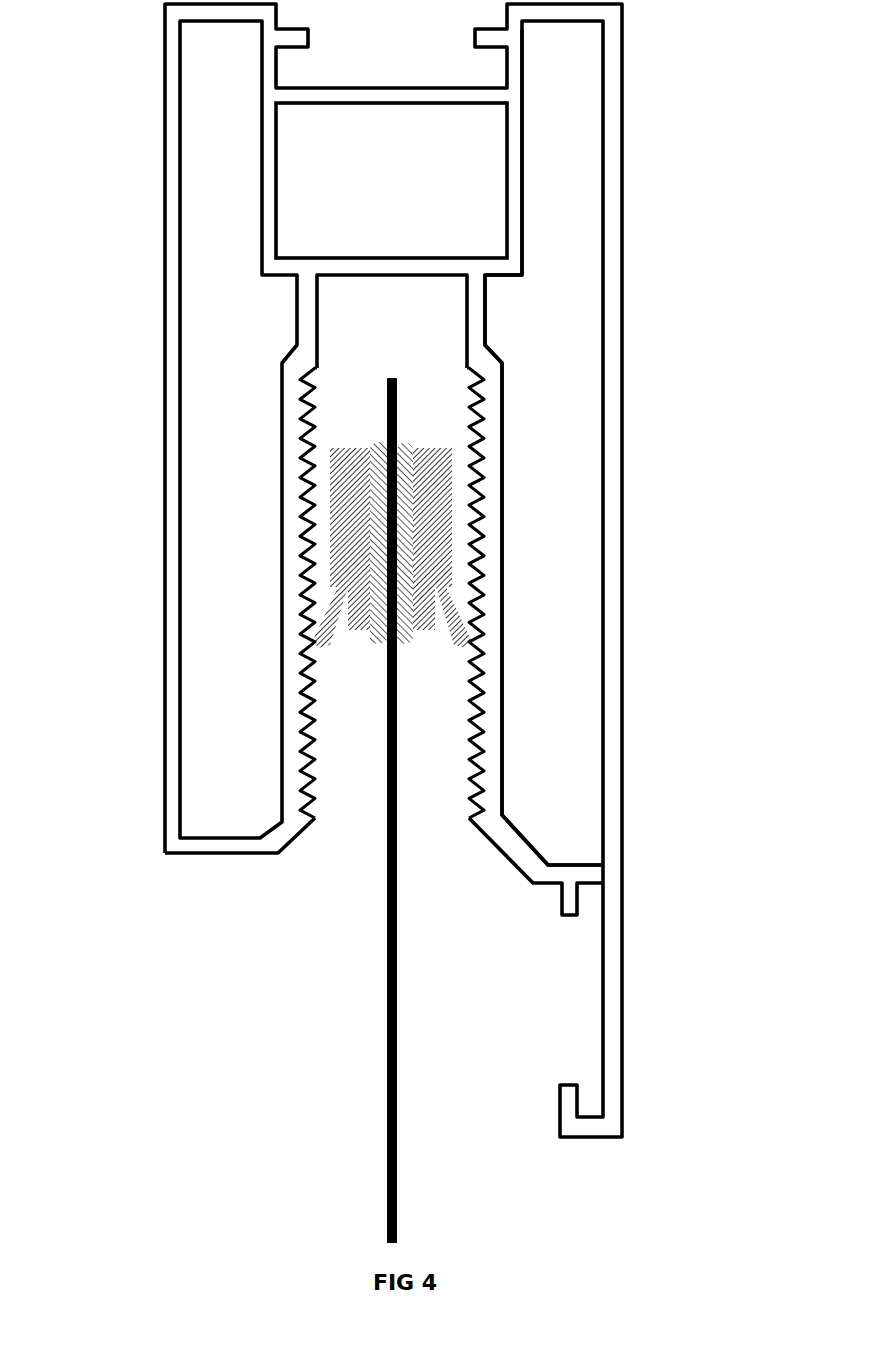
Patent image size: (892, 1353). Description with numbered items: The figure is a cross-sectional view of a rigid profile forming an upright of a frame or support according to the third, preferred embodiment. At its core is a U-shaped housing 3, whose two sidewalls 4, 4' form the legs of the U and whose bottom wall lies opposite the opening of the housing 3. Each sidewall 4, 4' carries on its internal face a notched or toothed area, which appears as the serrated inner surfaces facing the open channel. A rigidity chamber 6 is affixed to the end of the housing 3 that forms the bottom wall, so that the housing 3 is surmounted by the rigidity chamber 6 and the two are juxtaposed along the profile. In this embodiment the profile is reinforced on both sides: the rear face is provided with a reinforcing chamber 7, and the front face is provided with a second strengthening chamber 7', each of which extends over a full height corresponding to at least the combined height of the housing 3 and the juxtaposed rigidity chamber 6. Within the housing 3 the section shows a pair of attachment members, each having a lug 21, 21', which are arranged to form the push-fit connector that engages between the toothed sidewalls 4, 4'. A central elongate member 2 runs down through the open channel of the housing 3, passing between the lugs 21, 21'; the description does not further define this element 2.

The rod 2 is at (420, 810).
The housing 3 is at (393, 570).
The sidewall 4 is at (582, 593).
The sidewall 4' is at (196, 593).
The rigidity chamber 6 is at (391, 129).
The reinforcing chamber 7 is at (591, 447).
The second strengthening chamber 7' is at (186, 429).
The lug 21 is at (434, 576).
The lug 21' is at (350, 576).